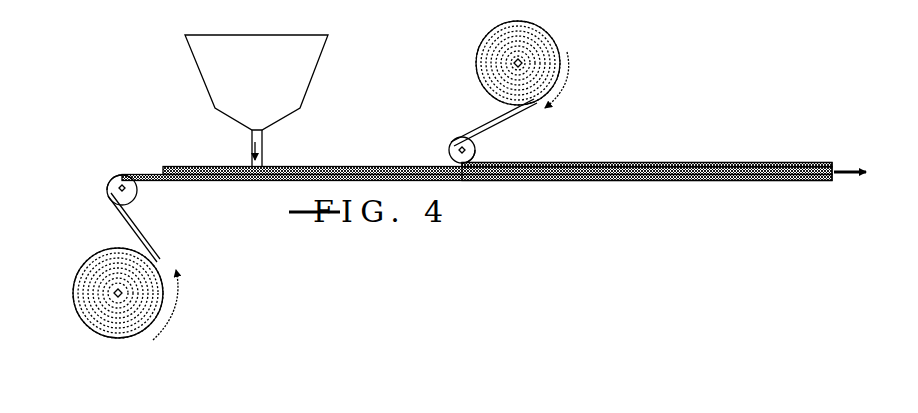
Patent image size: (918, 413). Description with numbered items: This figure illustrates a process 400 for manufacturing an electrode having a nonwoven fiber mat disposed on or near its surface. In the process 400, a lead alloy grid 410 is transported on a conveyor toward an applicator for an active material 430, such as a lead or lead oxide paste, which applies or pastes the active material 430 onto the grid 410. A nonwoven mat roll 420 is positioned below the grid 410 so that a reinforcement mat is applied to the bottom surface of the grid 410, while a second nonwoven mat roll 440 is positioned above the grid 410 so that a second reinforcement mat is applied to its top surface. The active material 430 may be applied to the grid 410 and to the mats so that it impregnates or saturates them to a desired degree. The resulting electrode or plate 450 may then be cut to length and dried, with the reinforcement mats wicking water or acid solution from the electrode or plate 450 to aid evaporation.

The process 400 is at (786, 99).
The lead alloy grid 410 is at (200, 166).
The nonwoven mat roll 420 is at (110, 337).
The active material 430 is at (318, 68).
The second nonwoven mat roll 440 is at (500, 126).
The electrode or plate 450 is at (692, 162).